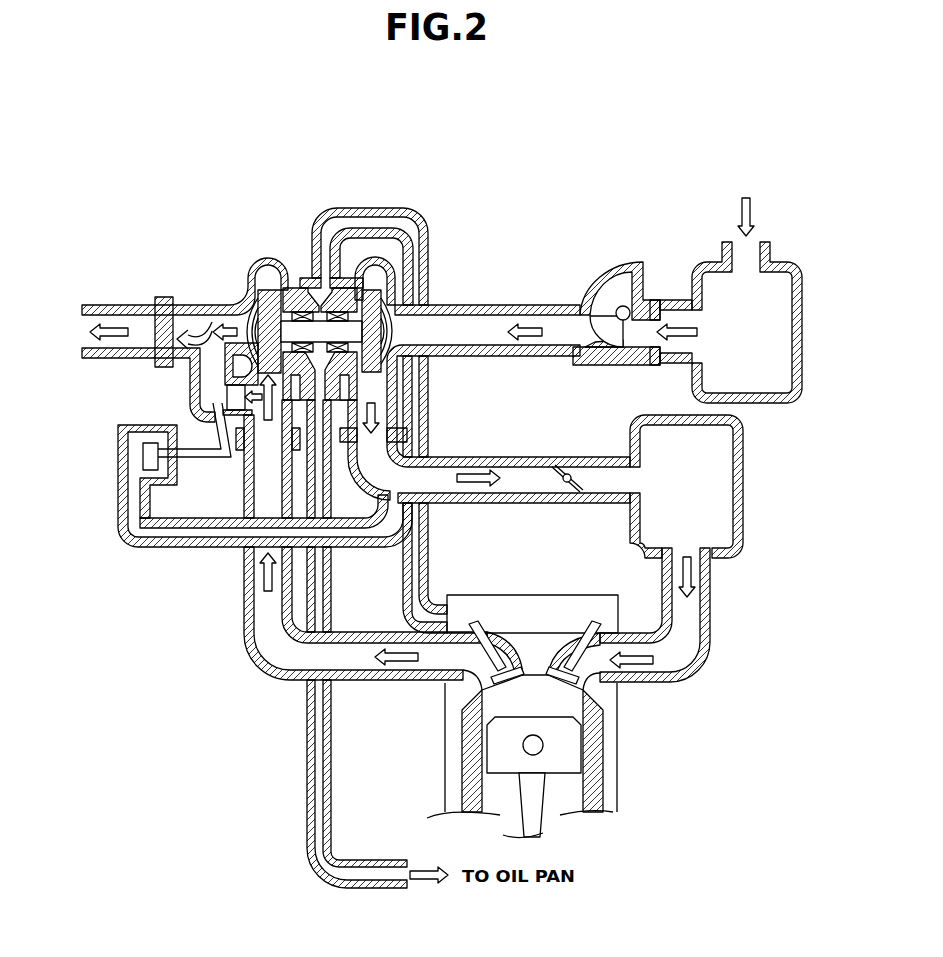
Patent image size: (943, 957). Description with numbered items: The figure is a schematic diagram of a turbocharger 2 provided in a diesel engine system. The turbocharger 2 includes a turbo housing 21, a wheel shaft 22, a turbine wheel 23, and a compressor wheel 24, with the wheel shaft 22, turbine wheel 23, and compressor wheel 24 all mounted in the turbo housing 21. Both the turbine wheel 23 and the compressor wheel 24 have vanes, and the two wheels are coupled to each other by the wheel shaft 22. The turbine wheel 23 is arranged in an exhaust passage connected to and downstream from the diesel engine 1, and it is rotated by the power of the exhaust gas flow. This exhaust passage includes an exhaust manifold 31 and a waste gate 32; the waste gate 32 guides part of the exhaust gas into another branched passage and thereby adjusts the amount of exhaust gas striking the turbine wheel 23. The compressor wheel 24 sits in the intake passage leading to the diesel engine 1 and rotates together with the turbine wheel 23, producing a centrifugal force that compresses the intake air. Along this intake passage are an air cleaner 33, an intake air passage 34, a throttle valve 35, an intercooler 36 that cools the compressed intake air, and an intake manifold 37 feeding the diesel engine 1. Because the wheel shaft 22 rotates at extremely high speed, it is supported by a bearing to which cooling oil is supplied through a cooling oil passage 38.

The diesel engine 1 is at (505, 596).
The turbocharger 2 is at (282, 287).
The turbo housing 21 is at (258, 248).
The wheel shaft 22 is at (352, 330).
The turbine wheel 23 is at (268, 318).
The compressor wheel 24 is at (372, 315).
The exhaust manifold 31 is at (243, 655).
The waste gate 32 is at (118, 478).
The air cleaner 33 is at (710, 262).
The intake air passage 34 is at (545, 305).
The throttle valve 35 is at (565, 462).
The intercooler 36 is at (744, 490).
The intake manifold 37 is at (707, 660).
The cooling oil passage 38 is at (373, 208).